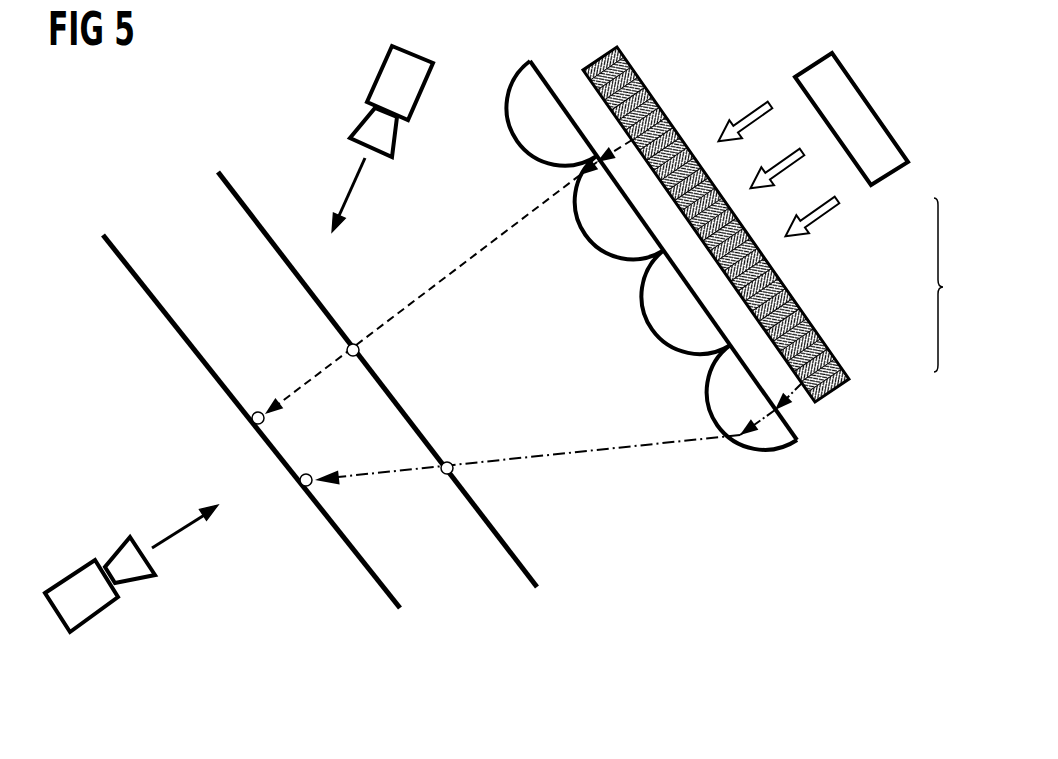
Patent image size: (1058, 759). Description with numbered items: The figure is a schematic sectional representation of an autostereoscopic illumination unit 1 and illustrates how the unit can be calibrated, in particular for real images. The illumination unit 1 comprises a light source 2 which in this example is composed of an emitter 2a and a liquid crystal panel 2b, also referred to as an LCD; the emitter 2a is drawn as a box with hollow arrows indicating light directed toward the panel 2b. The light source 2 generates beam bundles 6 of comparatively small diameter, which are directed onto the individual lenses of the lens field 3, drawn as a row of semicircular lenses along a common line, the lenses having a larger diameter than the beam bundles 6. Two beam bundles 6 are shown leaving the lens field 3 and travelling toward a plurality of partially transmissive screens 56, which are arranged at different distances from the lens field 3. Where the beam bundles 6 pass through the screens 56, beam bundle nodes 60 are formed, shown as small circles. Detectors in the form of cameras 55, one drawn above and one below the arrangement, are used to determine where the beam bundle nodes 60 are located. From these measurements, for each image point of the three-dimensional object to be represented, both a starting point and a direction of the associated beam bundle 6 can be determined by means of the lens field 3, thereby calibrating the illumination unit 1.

The illumination unit 1 is at (856, 517).
The light source 2 is at (948, 285).
The emitter 2a is at (893, 177).
The liquid crystal panel 2b is at (858, 372).
The lens field 3 is at (770, 452).
The beam bundle 6 is at (485, 252).
The camera 55 is at (427, 93).
The partially transmissive screen 56 is at (490, 528).
The beam bundle node 60 is at (353, 343).